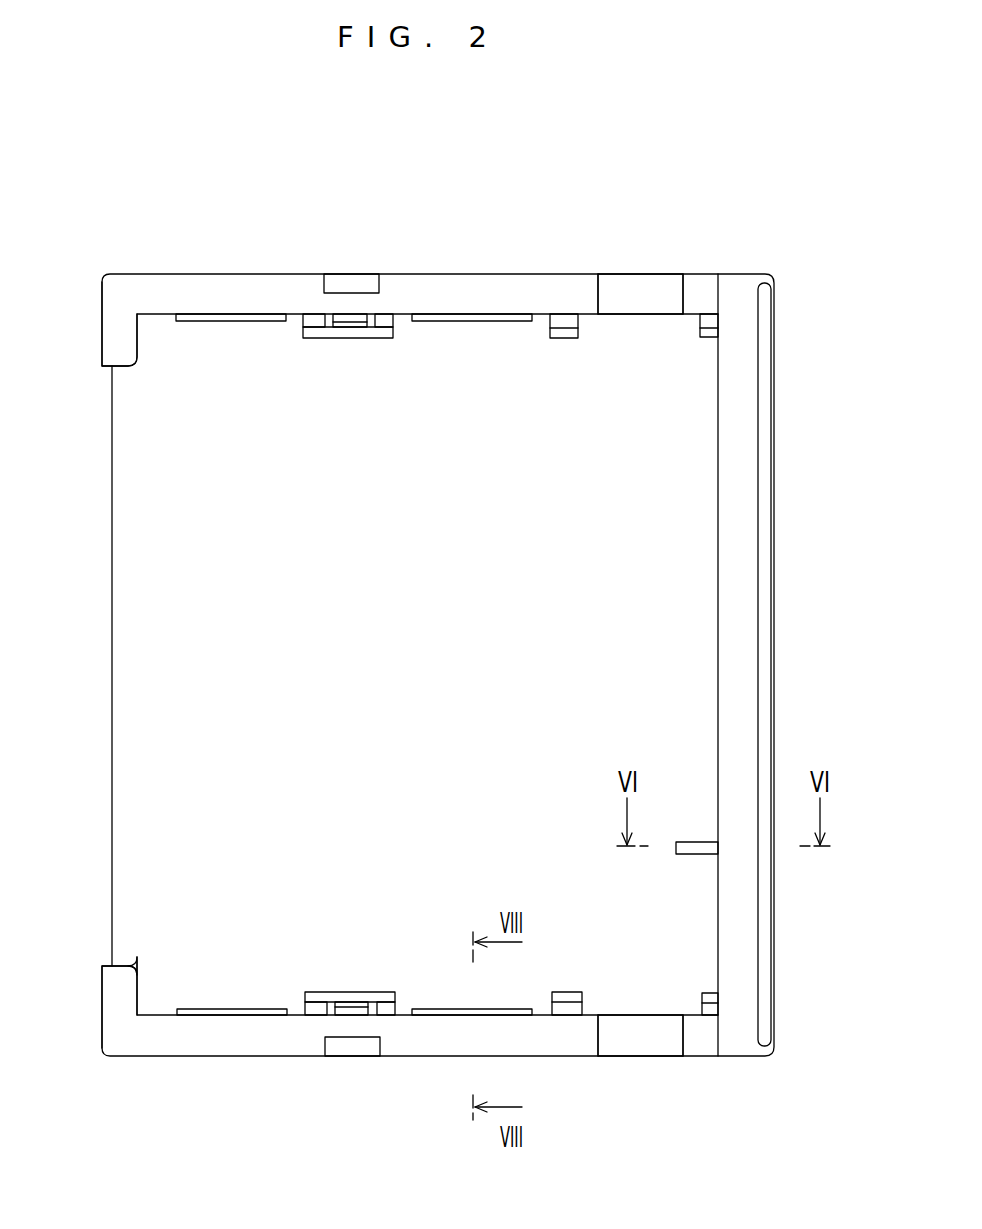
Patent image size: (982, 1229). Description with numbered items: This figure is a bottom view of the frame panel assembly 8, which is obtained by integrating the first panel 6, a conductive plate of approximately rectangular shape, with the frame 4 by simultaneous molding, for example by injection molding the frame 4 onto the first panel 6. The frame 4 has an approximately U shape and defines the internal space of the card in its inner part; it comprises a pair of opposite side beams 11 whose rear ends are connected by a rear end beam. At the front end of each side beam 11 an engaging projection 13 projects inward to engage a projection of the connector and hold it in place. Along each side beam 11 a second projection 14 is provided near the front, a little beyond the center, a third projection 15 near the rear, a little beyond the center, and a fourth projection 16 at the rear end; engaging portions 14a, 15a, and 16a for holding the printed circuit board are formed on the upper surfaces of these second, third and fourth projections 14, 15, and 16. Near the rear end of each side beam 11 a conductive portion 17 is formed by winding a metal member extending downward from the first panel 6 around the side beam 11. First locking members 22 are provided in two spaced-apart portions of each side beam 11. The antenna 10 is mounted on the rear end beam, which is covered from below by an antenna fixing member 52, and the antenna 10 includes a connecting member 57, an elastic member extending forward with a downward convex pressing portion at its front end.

The frame 4 is at (768, 257).
The first panel 6 is at (130, 668).
The frame panel assembly 8 is at (498, 200).
The antenna 10 is at (665, 855).
The side beams 11 is at (218, 285).
The engaging projection 13 is at (115, 340).
The second projection 14 is at (303, 330).
The engaging portion 14a is at (327, 337).
The third projection 15 is at (580, 322).
The engaging portion 15a is at (562, 338).
The fourth projection 16 is at (700, 320).
The engaging portion 16a is at (708, 337).
The conductive portion 17 is at (638, 290).
The first locking members 22 is at (185, 330).
The antenna fixing member 52 is at (743, 577).
The connecting member 57 is at (690, 845).